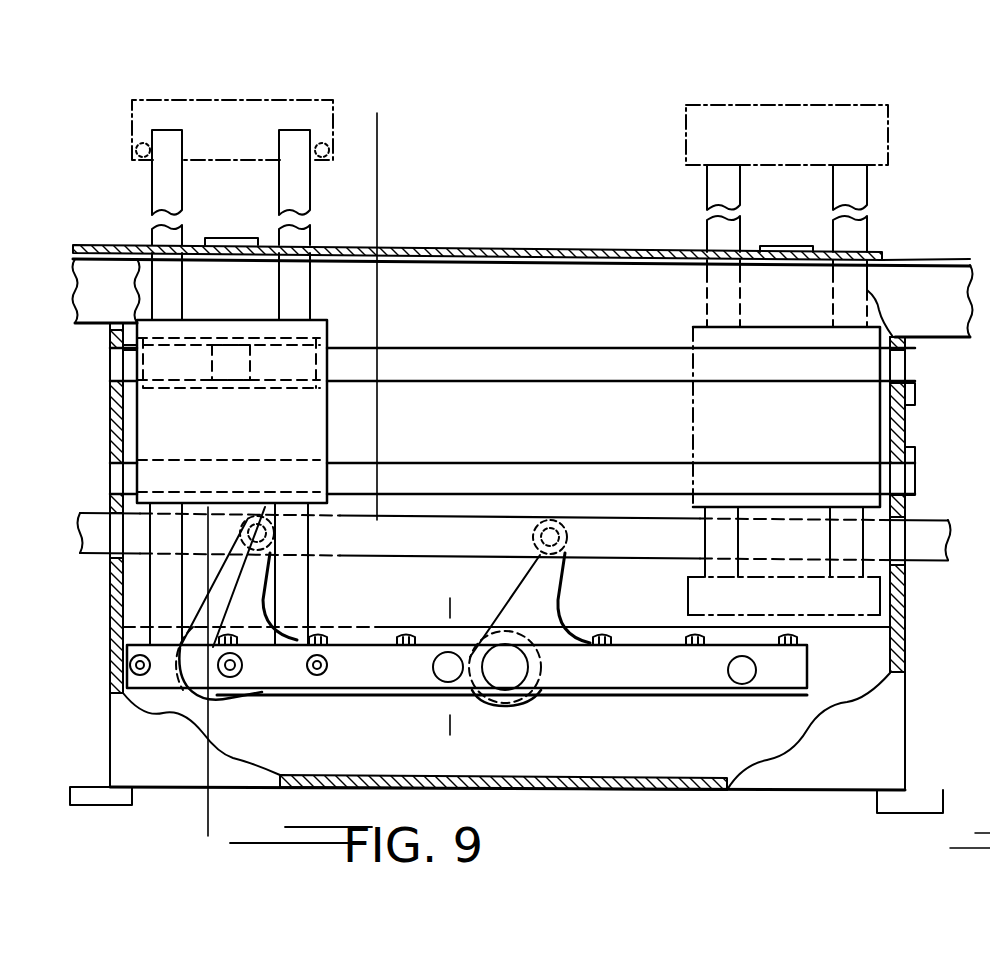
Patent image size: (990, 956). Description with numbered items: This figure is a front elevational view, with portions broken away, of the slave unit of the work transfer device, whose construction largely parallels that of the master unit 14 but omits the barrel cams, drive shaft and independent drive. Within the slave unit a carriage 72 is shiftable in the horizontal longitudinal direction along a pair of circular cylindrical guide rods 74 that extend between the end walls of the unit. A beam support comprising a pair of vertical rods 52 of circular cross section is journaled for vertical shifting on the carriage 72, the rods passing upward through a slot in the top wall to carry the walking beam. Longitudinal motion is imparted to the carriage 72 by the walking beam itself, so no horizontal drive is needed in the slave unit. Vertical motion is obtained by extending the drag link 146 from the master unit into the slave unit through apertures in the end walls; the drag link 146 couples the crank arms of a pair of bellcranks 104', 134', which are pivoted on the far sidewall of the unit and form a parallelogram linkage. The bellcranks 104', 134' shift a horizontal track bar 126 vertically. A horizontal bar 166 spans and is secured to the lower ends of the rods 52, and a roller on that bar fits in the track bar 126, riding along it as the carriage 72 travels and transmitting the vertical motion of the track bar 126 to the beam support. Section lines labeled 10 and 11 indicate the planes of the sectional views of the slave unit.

The section line 10- 10 is at (178, 827).
The section line 11- 11 is at (428, 725).
The master unit 14 is at (632, 793).
The vertical rods 52 is at (278, 200).
The carriage 72 is at (327, 425).
The guide rods 74 is at (513, 443).
The bellcrank 104' is at (252, 623).
The track bar 126 is at (692, 707).
The bellcrank 134' is at (546, 638).
The drag link 146 is at (373, 547).
The horizontal bar 166 is at (176, 669).